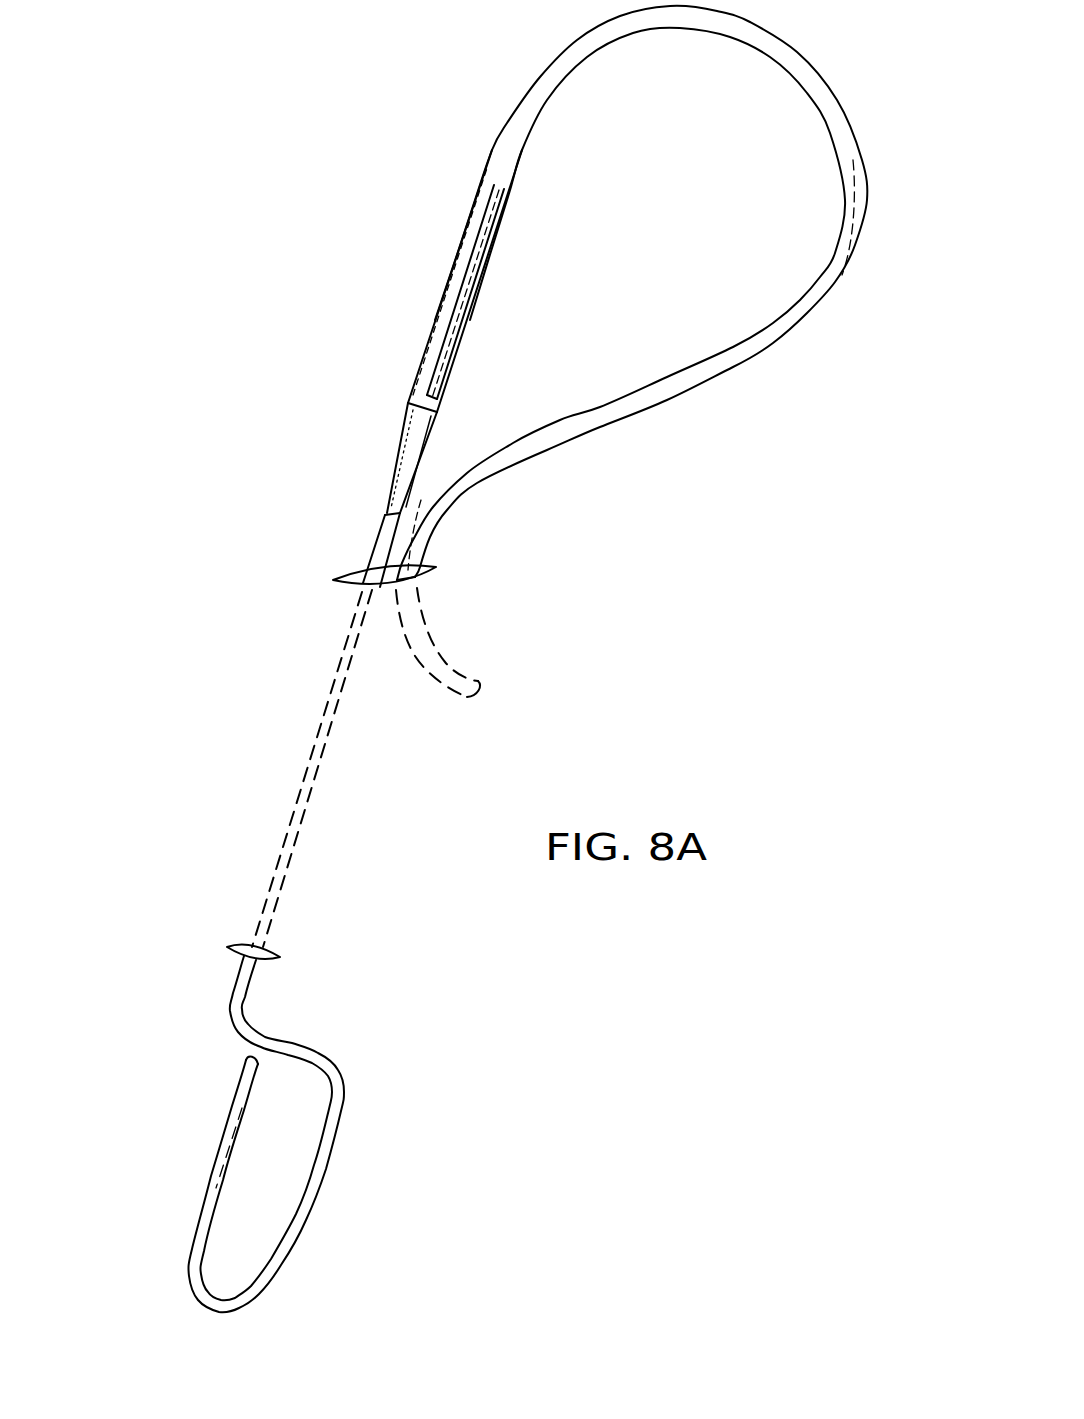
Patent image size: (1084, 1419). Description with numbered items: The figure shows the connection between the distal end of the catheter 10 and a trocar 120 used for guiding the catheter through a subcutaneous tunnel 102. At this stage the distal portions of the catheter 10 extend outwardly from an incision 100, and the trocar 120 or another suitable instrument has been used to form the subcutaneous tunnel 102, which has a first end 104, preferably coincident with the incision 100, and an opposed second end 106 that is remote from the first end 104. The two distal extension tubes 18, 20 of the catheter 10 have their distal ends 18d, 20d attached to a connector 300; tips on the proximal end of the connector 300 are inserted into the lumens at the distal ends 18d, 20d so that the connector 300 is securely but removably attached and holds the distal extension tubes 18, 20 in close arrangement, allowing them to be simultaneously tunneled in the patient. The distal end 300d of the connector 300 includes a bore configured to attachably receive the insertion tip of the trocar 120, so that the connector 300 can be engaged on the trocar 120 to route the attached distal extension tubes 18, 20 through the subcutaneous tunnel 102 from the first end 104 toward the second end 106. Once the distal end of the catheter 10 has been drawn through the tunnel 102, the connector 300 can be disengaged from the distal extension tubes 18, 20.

The catheter 10 is at (782, 355).
The distal extension tube 18 is at (463, 255).
The distal end of distal extension tube 18d is at (417, 397).
The distal extension tube 20 is at (473, 278).
The distal end of distal extension tube 20d is at (440, 400).
The connector 300 is at (410, 438).
The distal end of connector 300d is at (380, 508).
The incision 100 is at (421, 564).
The subcutaneous tunnel 102 is at (327, 708).
The first end of subcutaneous tunnel 104 is at (362, 585).
The second end of subcutaneous tunnel 106 is at (273, 953).
The trocar 120 is at (380, 547).